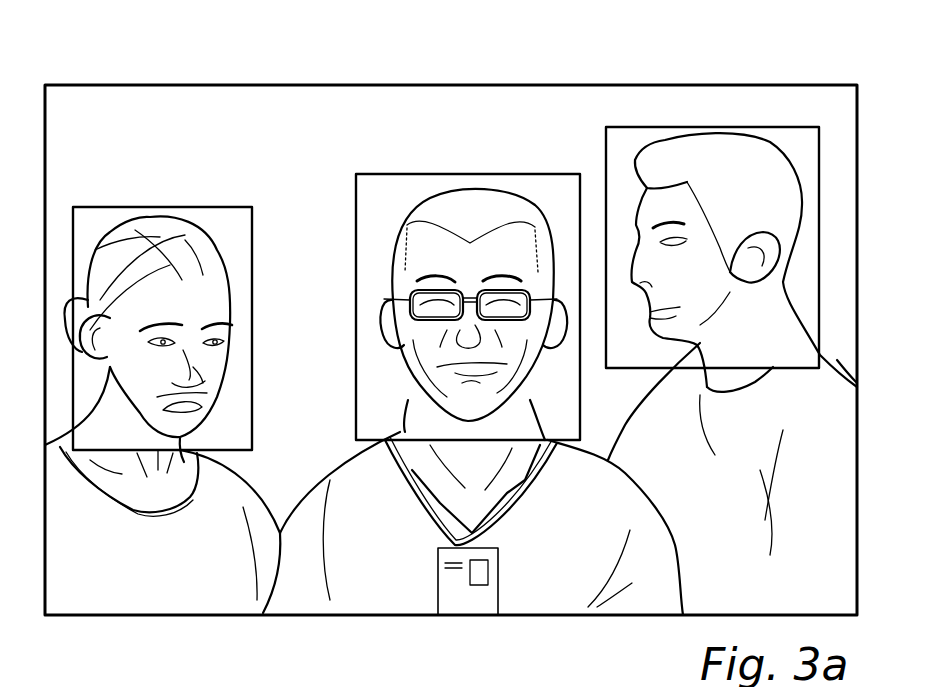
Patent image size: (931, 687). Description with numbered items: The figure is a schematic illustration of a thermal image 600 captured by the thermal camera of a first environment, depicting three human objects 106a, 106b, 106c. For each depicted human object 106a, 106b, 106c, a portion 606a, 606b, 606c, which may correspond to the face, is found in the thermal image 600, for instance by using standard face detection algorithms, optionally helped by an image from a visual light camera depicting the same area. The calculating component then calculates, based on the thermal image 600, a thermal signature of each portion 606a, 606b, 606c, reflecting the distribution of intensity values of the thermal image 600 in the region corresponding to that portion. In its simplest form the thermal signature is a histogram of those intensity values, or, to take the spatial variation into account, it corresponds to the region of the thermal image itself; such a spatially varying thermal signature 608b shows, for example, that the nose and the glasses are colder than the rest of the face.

The thermal image 600 is at (680, 85).
The portion of the first human object 606a is at (170, 207).
The portion of the second human object 606b is at (494, 174).
The portion of the third human object 606c is at (788, 128).
The first human object 106a is at (197, 243).
The second human object 106b is at (435, 217).
The third human object 106c is at (718, 155).
The thermal signature 608b is at (412, 686).